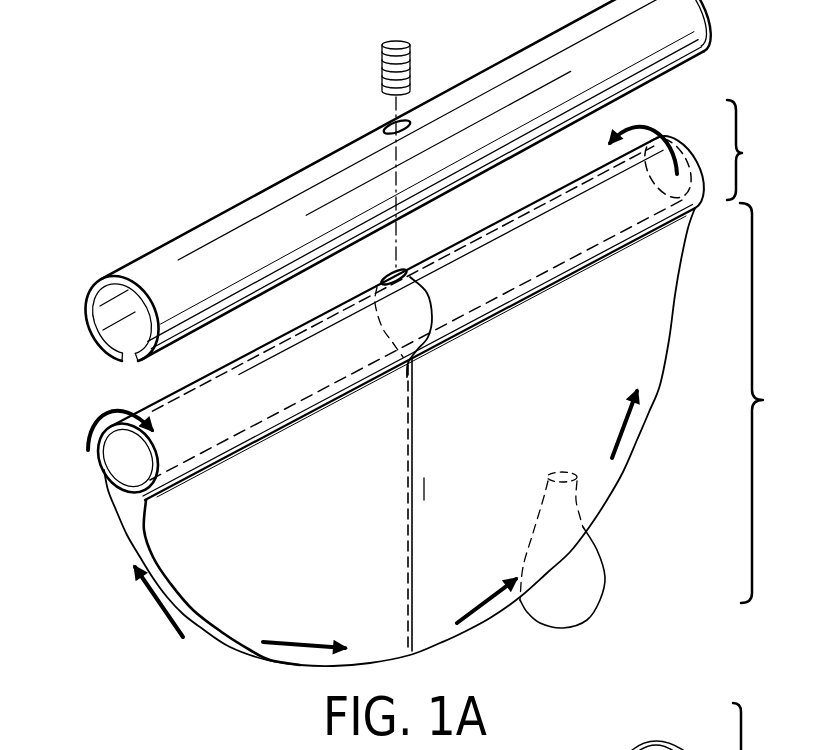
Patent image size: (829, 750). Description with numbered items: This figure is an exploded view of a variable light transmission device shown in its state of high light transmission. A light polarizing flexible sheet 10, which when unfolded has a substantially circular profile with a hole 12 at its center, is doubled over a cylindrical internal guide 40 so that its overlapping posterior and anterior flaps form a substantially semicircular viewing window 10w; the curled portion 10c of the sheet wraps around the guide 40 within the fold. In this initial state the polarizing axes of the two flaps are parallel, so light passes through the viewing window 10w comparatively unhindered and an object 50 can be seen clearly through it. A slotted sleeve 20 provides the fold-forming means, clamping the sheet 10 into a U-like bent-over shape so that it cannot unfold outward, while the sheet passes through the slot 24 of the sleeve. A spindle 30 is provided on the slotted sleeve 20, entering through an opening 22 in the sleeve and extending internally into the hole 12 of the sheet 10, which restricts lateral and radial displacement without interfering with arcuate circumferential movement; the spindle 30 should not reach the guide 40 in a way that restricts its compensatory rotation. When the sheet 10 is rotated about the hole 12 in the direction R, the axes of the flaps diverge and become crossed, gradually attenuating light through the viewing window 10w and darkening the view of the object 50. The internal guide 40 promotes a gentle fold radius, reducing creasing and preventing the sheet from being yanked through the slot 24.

The light polarizing flexible sheet 10 is at (445, 383).
The curled portion of sheet 10c is at (434, 315).
The viewing window 10w is at (667, 355).
The hole 12 is at (386, 268).
The slotted sleeve 20 is at (384, 196).
The hole in tube 22 is at (389, 121).
The slot 24 is at (119, 363).
The spindle 30 is at (412, 47).
The cylindrical internal guide 40 is at (124, 462).
The object 50 is at (594, 590).